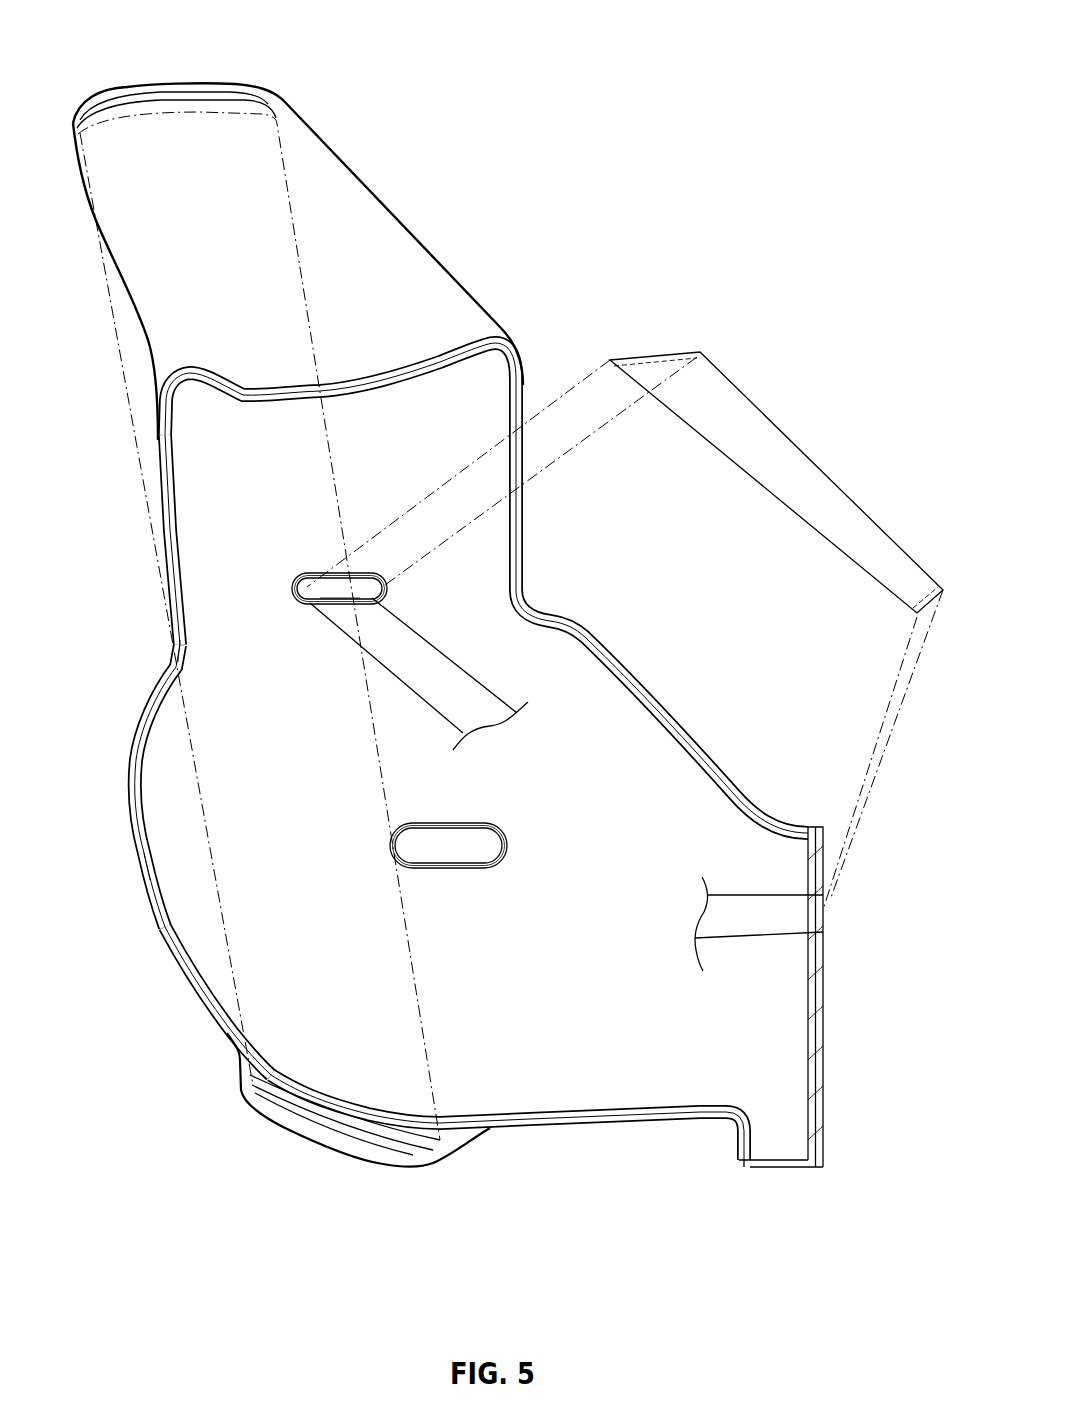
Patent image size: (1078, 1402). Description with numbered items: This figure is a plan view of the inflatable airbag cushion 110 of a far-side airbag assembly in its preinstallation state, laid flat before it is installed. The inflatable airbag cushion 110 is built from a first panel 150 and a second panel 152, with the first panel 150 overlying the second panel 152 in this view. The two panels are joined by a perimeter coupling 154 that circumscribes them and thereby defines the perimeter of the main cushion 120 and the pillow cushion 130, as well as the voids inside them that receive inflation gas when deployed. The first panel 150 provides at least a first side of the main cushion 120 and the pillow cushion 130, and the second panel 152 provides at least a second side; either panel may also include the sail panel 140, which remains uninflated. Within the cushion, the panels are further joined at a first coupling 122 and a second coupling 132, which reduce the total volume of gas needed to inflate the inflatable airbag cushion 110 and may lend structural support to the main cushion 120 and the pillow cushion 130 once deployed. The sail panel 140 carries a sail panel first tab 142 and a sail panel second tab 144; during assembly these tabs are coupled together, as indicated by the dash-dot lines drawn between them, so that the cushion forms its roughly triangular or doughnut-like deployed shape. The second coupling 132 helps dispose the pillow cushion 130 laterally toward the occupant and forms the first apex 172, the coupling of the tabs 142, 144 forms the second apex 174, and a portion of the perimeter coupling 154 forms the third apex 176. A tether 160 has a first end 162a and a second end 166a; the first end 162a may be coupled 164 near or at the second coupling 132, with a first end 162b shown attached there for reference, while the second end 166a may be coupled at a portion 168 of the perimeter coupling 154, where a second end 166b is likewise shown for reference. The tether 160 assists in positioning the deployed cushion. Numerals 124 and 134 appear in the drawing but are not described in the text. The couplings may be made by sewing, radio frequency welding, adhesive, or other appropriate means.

The inflatable airbag cushion 110 is at (610, 128).
The main cushion 120 is at (463, 907).
The first coupling 122 is at (507, 845).
The lower flange edge 124 is at (737, 1153).
The pillow cushion 130 is at (420, 447).
The second coupling 132 is at (390, 587).
The bend 134 is at (163, 650).
The sail panel 140 is at (226, 220).
The sail panel first tab 142 is at (143, 84).
The sail panel second tab 144 is at (330, 1147).
The first panel 150 is at (173, 820).
The second panel 152 is at (160, 845).
The perimeter coupling 154 is at (185, 991).
The tether 160 is at (807, 458).
The first end of the tether 162a is at (652, 353).
The first end 162b is at (377, 597).
The coupling of the tether first end 164 is at (356, 580).
The second end of the tether 166a is at (922, 605).
The second end 166b is at (824, 910).
The portion of the perimeter coupling 168 is at (821, 917).
The first apex 172 is at (237, 617).
The second apex 174 is at (290, 1110).
The third apex 176 is at (257, 385).